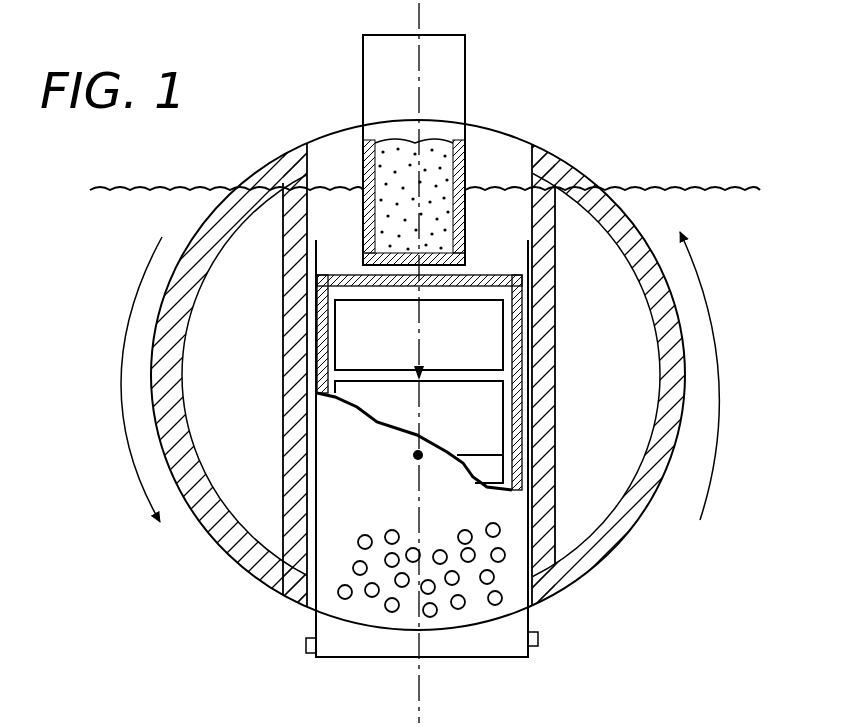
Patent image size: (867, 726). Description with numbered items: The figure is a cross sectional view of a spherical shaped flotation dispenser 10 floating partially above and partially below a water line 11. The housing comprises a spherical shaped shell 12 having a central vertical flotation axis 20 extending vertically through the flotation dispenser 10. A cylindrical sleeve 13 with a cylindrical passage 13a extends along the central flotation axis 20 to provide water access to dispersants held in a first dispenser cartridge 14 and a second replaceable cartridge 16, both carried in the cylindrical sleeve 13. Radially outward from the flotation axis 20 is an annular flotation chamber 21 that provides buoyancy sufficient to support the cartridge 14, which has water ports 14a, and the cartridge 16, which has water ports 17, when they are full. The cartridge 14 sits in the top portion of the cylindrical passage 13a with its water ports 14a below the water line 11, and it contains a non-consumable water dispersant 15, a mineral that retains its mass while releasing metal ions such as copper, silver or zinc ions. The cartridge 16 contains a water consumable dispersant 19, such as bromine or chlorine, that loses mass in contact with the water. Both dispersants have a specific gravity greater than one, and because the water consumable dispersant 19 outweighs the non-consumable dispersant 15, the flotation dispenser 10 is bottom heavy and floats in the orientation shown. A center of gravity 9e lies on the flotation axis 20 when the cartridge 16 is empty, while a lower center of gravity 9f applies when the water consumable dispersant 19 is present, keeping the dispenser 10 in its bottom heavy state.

The flotation dispenser 10 is at (622, 86).
The water line 11 is at (663, 183).
The spherical shaped shell 12 is at (687, 350).
The cylindrical sleeve 13 is at (530, 172).
The cylindrical passage 13a is at (516, 241).
The dispenser cartridge 14 is at (465, 70).
The water ports 14a is at (363, 219).
The non-consumable water dispersant 15 is at (393, 188).
The replaceable cartridge 16 is at (503, 573).
The water ports 17 is at (458, 609).
The water consumable dispersant 19 is at (483, 337).
The central vertical flotation axis 20 is at (420, 25).
The annular flotation chamber 21 is at (613, 384).
The center of gravity 9e is at (418, 373).
The center of gravity 9f is at (418, 455).